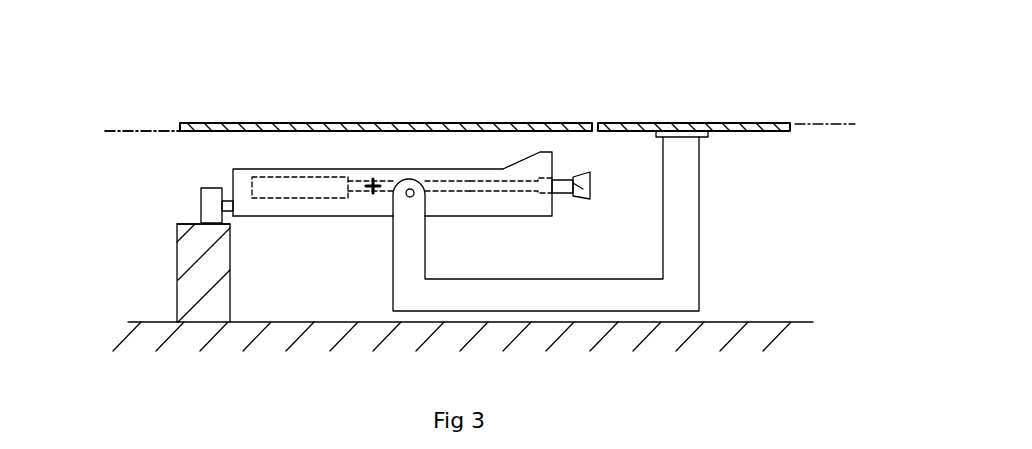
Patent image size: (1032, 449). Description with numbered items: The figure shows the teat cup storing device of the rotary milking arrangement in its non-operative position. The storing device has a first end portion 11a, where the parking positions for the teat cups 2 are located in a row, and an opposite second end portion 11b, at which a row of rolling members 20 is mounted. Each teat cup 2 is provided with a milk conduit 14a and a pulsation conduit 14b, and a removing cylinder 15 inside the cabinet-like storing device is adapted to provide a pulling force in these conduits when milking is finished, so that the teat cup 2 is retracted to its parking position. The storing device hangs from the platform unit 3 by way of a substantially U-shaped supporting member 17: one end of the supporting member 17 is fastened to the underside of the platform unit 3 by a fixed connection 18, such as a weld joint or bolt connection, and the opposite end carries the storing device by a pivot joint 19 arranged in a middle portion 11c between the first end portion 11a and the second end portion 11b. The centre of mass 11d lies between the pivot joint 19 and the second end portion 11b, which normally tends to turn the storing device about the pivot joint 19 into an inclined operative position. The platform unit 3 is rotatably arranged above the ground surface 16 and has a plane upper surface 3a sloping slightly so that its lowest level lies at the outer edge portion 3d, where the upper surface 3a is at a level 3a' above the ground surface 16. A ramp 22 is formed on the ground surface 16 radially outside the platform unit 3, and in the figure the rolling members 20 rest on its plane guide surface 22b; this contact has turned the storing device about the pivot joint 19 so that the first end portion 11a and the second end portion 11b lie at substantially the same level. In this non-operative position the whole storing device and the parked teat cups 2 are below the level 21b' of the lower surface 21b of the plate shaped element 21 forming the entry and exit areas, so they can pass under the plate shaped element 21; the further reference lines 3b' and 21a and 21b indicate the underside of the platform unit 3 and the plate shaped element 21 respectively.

The teat cup 2 is at (590, 195).
The platform unit 3 is at (742, 128).
The upper surface 3a is at (715, 79).
The level of upper surface at outer edge portion 3a' is at (831, 86).
The plate extension axis 3b' is at (112, 106).
The outer edge portion 3d is at (600, 122).
The first end portion 11a is at (552, 172).
The second end portion 11b is at (233, 180).
The middle portion 11c is at (375, 200).
The centre of mass 11d is at (372, 182).
The milk conduit 14a is at (465, 187).
The pulsation conduit 14b is at (505, 188).
The removing cylinder 15 is at (297, 187).
The ground surface 16 is at (763, 322).
The supporting member 17 is at (680, 250).
The fixed connection 18 is at (699, 137).
The pivot joint 19 is at (412, 183).
The rolling member 20 is at (207, 202).
The plate shaped element 21 is at (298, 123).
The plate portion 21a is at (528, 122).
The lower surface 21b is at (293, 80).
The level of lower surface 21b' is at (142, 94).
The ramp 22 is at (197, 247).
The plane guide surface 22b is at (197, 222).